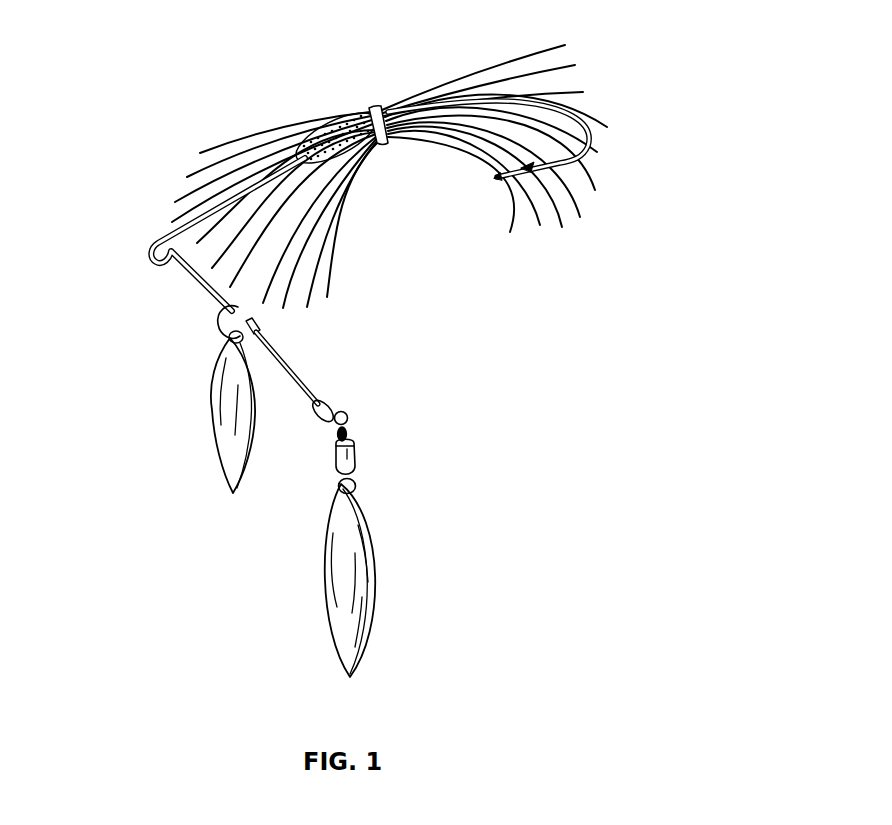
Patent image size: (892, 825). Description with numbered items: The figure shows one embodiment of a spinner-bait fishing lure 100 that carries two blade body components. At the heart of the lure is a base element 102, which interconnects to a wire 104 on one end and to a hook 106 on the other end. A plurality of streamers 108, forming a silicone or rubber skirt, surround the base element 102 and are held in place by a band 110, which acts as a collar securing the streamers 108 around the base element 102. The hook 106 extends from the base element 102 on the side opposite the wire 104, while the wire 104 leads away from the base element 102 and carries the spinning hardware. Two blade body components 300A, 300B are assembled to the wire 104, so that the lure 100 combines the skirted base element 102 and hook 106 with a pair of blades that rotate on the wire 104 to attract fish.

The spinnerbait fishing lure 100 is at (118, 113).
The base element 102 is at (341, 124).
The wire 104 is at (193, 272).
The hook 106 is at (488, 186).
The streamers 108 is at (332, 263).
The band 110 is at (372, 107).
The blade body component 300A is at (231, 452).
The blade body component 300B is at (360, 583).